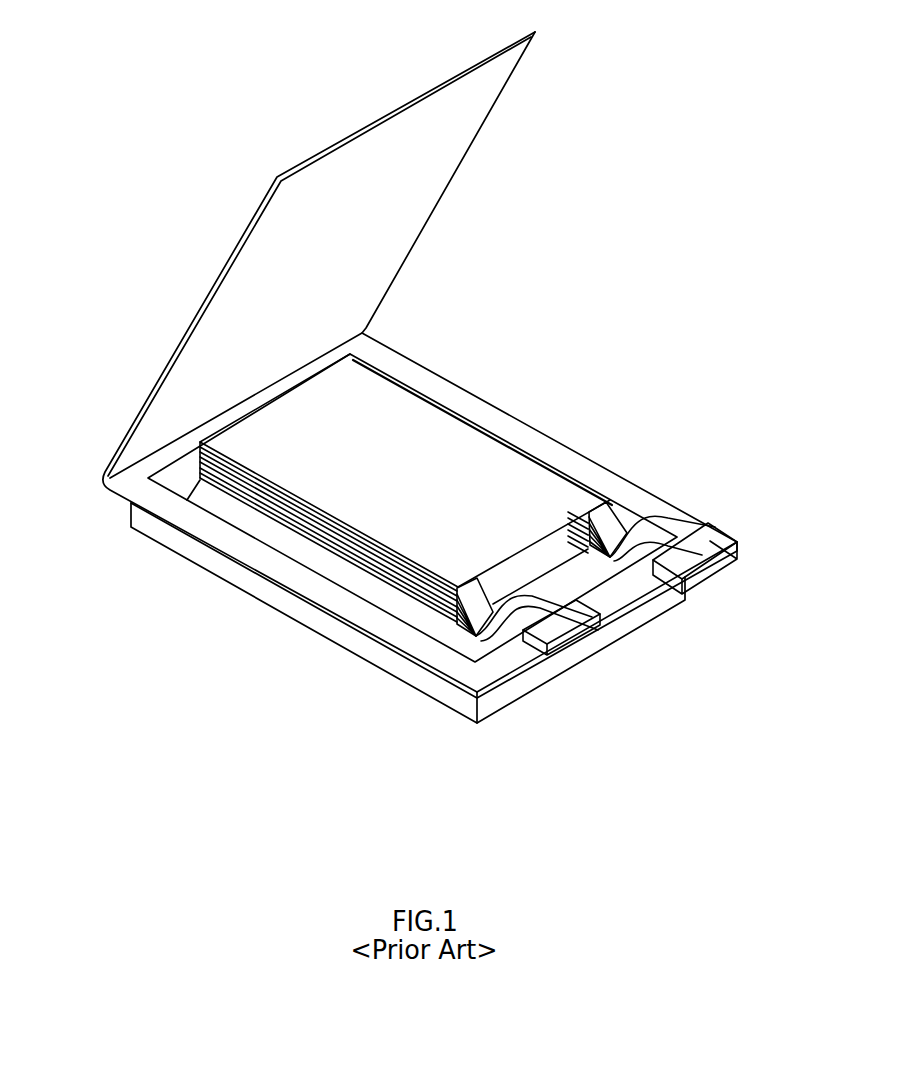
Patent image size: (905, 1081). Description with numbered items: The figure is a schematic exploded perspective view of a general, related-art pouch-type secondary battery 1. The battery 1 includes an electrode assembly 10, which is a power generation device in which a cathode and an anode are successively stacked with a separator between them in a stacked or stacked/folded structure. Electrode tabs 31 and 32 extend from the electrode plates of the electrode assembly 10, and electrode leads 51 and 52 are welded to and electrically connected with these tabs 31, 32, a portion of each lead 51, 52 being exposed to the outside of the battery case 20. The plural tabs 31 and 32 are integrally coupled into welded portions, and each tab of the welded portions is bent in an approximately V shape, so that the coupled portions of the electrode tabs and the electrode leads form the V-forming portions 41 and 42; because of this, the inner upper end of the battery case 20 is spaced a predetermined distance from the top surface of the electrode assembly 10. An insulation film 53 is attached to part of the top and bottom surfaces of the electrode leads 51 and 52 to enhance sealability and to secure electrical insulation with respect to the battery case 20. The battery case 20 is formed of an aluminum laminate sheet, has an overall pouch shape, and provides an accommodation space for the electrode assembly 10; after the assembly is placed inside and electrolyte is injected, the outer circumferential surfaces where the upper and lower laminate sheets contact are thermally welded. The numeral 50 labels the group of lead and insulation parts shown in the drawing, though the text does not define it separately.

The pouch-type secondary battery 1 is at (297, 105).
The electrode assembly 10 is at (477, 440).
The battery case 20 is at (130, 503).
The electrode tab 31 is at (462, 598).
The electrode tab 32 is at (604, 517).
The V-forming portion 41 is at (476, 632).
The V-forming portion 42 is at (611, 550).
The insulating tape 50 is at (797, 622).
The electrode lead 51 is at (598, 642).
The electrode lead 52 is at (722, 562).
The insulation film 53 is at (540, 645).